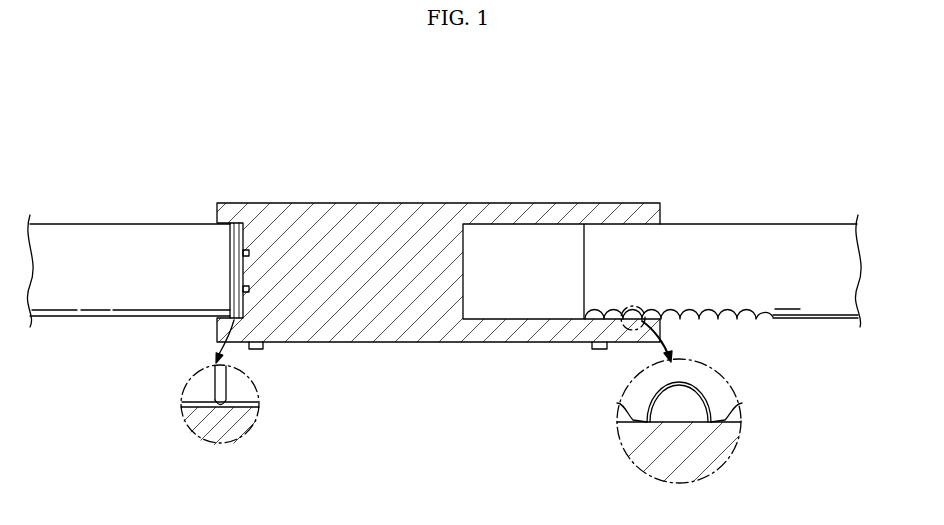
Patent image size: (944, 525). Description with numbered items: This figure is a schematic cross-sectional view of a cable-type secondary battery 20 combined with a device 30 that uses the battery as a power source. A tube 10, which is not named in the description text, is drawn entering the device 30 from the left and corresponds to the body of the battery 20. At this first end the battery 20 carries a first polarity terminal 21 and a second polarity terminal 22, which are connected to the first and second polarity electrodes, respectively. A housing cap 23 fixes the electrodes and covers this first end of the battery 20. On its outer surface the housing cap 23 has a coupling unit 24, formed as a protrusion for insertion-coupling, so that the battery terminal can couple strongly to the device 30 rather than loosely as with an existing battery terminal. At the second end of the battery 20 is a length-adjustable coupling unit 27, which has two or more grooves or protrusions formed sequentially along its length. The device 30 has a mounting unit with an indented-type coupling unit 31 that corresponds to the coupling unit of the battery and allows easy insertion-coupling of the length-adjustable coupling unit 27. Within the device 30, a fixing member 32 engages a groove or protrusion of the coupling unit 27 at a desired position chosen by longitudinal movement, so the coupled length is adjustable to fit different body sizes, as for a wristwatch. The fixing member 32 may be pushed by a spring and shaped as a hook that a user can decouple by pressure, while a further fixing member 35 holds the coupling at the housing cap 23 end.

The first tube 10 is at (55, 224).
The tube connecting assembly 20 is at (125, 212).
The upper fastening bolt 21 is at (249, 253).
The lower fastening bolt 22 is at (249, 289).
The plate 23 is at (240, 223).
The flange 24 is at (237, 223).
The coil spring 27 is at (749, 320).
The housing block 30 is at (434, 177).
The cavity 31 is at (524, 236).
The spring coil bump 32 is at (668, 403).
The plate seat 35 is at (208, 407).